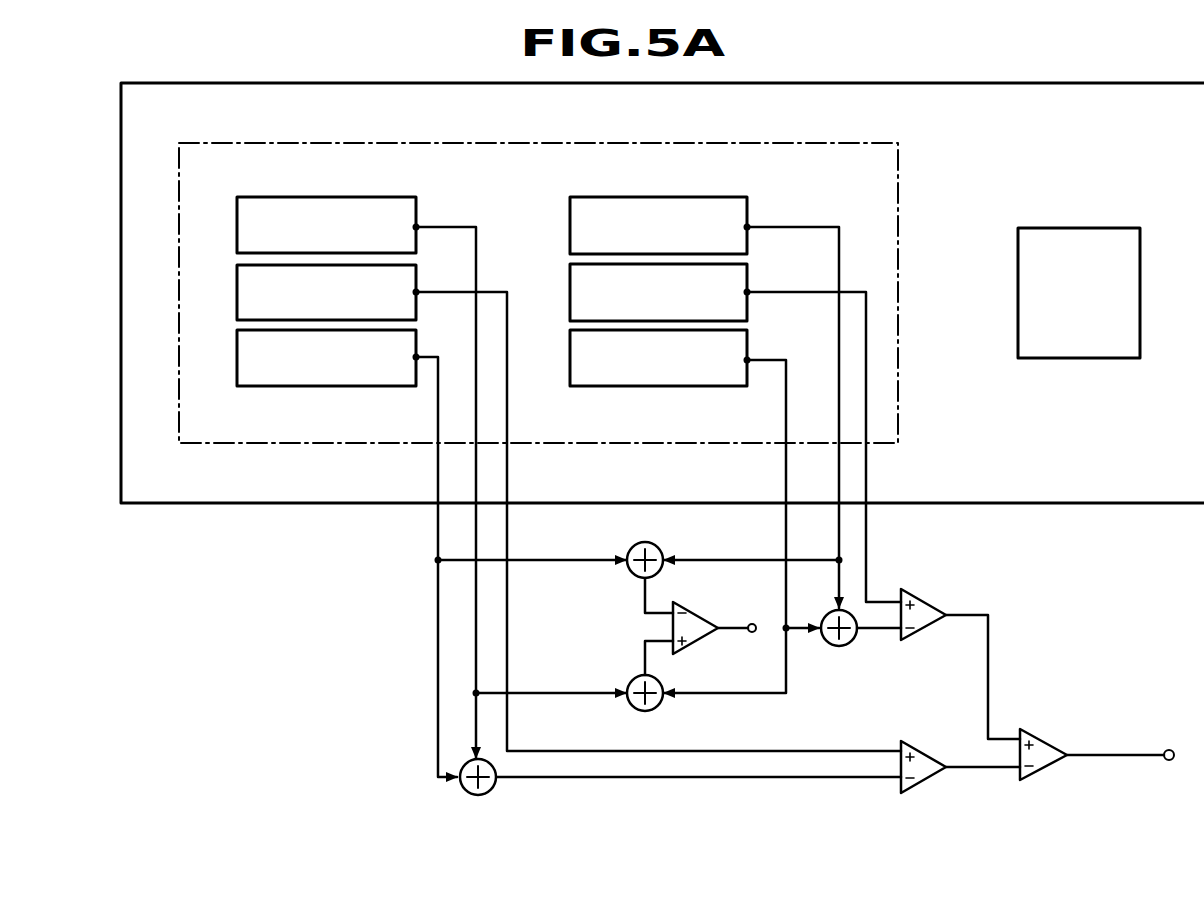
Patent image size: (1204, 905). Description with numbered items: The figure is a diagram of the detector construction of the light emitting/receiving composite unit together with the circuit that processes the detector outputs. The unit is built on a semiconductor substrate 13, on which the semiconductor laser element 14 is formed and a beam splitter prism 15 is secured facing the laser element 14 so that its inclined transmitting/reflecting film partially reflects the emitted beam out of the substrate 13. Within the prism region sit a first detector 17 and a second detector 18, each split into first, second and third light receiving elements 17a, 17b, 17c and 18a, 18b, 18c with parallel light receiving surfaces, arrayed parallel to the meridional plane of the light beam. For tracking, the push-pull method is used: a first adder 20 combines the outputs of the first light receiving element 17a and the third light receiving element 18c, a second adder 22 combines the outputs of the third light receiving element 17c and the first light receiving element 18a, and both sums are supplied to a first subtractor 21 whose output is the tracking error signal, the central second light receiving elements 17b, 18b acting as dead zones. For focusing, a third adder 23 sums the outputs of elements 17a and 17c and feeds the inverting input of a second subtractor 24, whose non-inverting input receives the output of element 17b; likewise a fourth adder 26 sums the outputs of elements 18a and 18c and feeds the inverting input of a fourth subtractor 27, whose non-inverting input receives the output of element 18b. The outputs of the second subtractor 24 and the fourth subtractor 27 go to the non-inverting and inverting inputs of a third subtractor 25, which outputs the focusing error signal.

The semiconductor substrate 13 is at (1093, 504).
The semiconductor laser element 14 is at (1050, 238).
The beam splitter prism 15 is at (903, 192).
The first detector 17 is at (627, 289).
The first light receiving element 17a is at (575, 213).
The second light receiving element 17b is at (580, 292).
The third light receiving element 17c is at (604, 373).
The second detector 18 is at (303, 291).
The first light receiving element 18a is at (258, 205).
The second light receiving element 18b is at (250, 290).
The third light receiving element 18c is at (311, 377).
The first adder 20 is at (627, 566).
The first subtractor 21 is at (690, 618).
The second adder 22 is at (636, 678).
The third adder 23 is at (847, 647).
The second subtractor 24 is at (920, 598).
The third subtractor 25 is at (1046, 737).
The fourth adder 26 is at (497, 784).
The fourth subtractor 27 is at (930, 770).